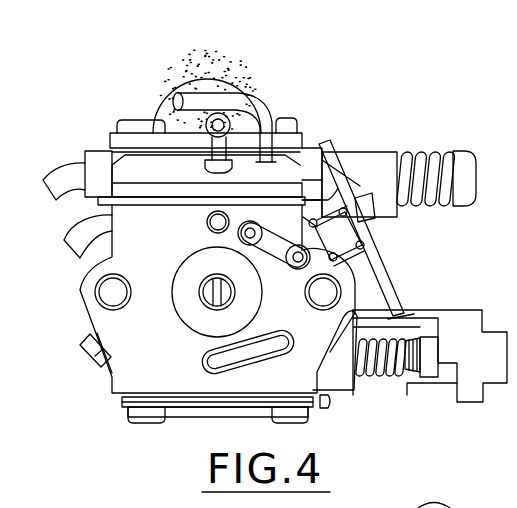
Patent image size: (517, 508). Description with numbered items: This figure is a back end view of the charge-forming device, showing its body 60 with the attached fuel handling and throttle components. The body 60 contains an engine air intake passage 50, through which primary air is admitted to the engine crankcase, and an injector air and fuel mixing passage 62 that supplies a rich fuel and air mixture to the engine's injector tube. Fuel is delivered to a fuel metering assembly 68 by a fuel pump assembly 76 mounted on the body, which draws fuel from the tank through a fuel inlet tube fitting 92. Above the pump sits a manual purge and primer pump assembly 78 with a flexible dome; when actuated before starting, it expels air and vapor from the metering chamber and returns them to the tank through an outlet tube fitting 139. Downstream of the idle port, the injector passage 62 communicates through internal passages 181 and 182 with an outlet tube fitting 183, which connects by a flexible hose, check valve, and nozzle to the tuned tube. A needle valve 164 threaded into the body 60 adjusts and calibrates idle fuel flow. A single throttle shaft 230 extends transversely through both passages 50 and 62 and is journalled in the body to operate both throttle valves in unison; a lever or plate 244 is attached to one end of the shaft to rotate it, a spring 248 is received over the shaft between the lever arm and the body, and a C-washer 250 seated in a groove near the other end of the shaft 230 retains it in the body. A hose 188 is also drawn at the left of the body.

The intake passage 50 is at (184, 306).
The body 60 is at (80, 303).
The injector air and fuel mixing passage 62 is at (297, 262).
The fuel metering assembly 68 is at (125, 400).
The fuel pump assembly 76 is at (118, 170).
The manual purge and primer pump assembly 78 is at (237, 42).
The fuel inlet tube fitting 92 is at (244, 90).
The outlet tube fitting 139 is at (58, 166).
The needle valve 164 is at (414, 371).
The passage 181 is at (269, 217).
The passage 182 is at (236, 238).
The outlet tube fitting 183 is at (233, 123).
The fuel line 188 is at (84, 233).
The throttle shaft 230 is at (81, 350).
The lever or plate 244 is at (384, 267).
The spring 248 is at (348, 254).
The C-washer 250 is at (84, 323).